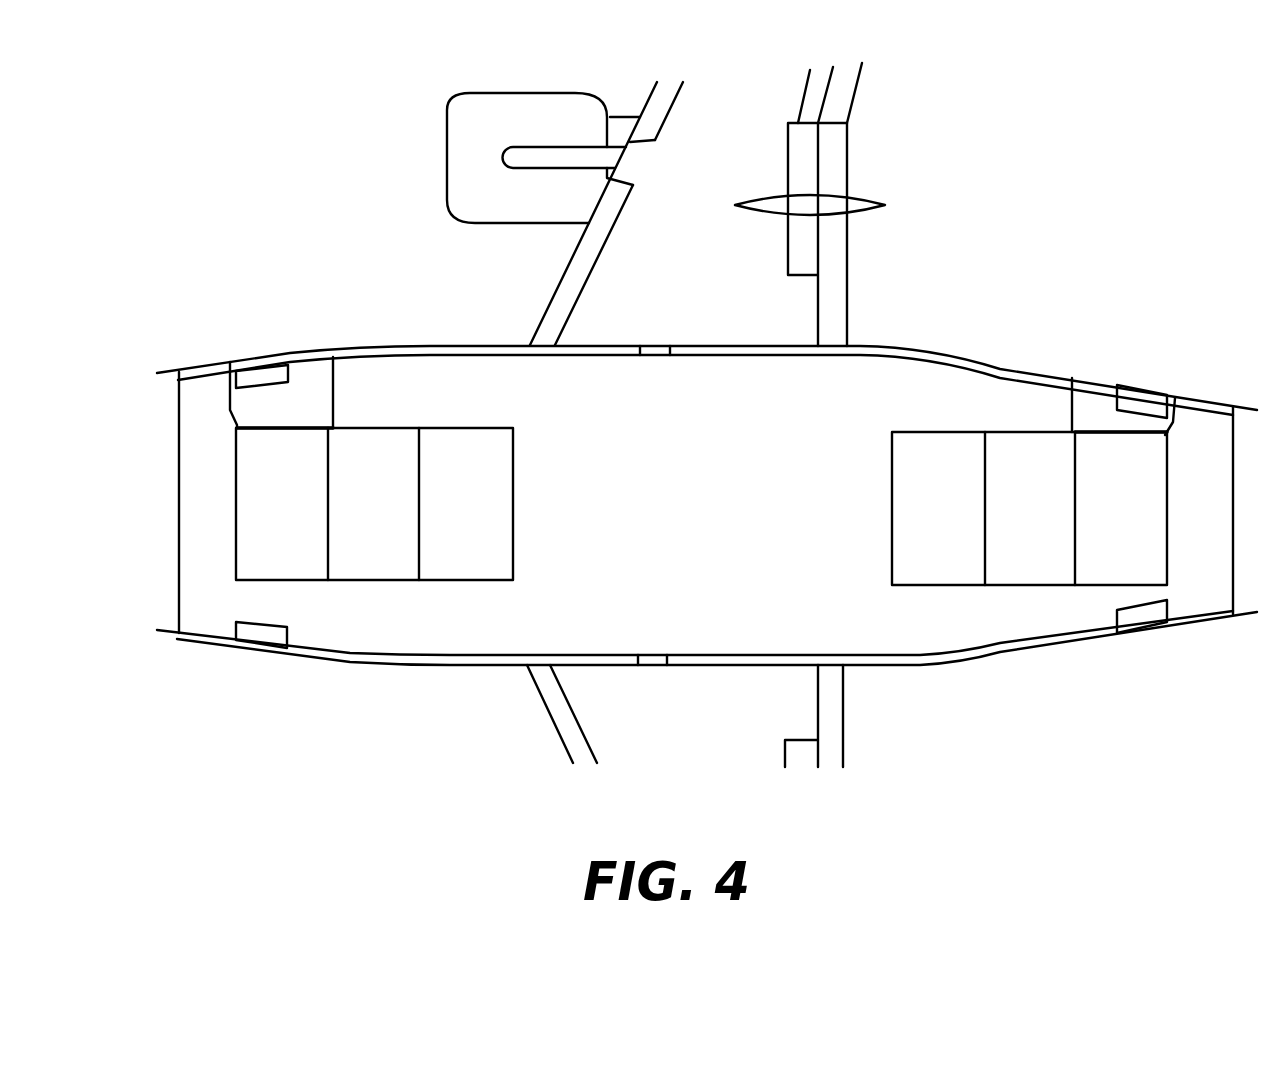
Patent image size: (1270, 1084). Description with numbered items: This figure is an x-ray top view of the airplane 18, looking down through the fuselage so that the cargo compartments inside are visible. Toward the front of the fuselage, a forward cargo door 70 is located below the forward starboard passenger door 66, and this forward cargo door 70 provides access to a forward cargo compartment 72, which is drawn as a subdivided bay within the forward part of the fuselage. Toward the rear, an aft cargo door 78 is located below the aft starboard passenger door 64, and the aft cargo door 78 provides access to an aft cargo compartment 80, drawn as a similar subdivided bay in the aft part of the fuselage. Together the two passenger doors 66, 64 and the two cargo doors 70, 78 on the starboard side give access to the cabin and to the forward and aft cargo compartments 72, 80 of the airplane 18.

The airplane 18 is at (1046, 187).
The aft starboard passenger door 64 is at (1152, 392).
The forward starboard passenger door 66 is at (250, 363).
The forward cargo door 70 is at (310, 385).
The forward cargo compartment 72 is at (468, 557).
The aft cargo door 78 is at (1100, 407).
The aft cargo compartment 80 is at (935, 562).